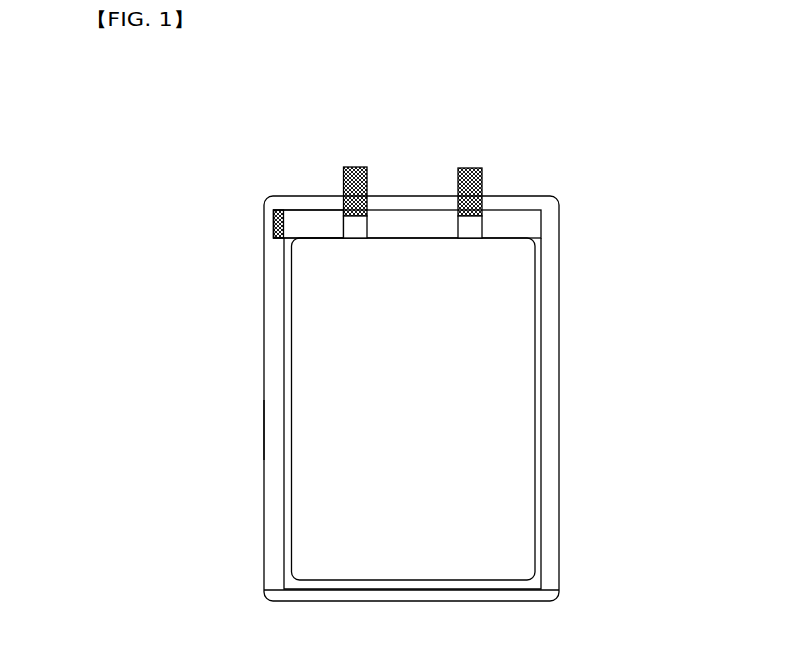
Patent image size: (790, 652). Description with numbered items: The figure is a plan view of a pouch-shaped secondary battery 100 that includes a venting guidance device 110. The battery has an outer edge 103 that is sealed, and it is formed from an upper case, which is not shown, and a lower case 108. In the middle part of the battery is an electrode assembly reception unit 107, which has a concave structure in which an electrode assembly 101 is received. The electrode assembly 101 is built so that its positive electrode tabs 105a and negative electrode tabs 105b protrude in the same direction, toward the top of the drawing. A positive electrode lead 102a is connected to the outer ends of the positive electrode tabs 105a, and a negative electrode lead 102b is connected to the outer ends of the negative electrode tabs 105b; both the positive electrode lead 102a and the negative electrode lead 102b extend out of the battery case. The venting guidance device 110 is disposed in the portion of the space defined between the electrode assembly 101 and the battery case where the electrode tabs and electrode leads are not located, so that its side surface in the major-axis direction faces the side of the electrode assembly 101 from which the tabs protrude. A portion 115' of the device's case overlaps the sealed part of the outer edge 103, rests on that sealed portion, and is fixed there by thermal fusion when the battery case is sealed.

The pouch-shaped secondary battery 100 is at (172, 138).
The electrode assembly 101 is at (289, 350).
The positive electrode lead 102a is at (358, 167).
The negative electrode lead 102b is at (472, 168).
The outer edge 103 is at (275, 322).
The positive electrode tabs 105a is at (368, 235).
The negative electrode tabs 105b is at (478, 227).
The electrode assembly reception unit 107 is at (285, 585).
The lower case 108 is at (224, 428).
The venting guidance device 110 is at (308, 212).
The portion of the case 115' is at (238, 234).